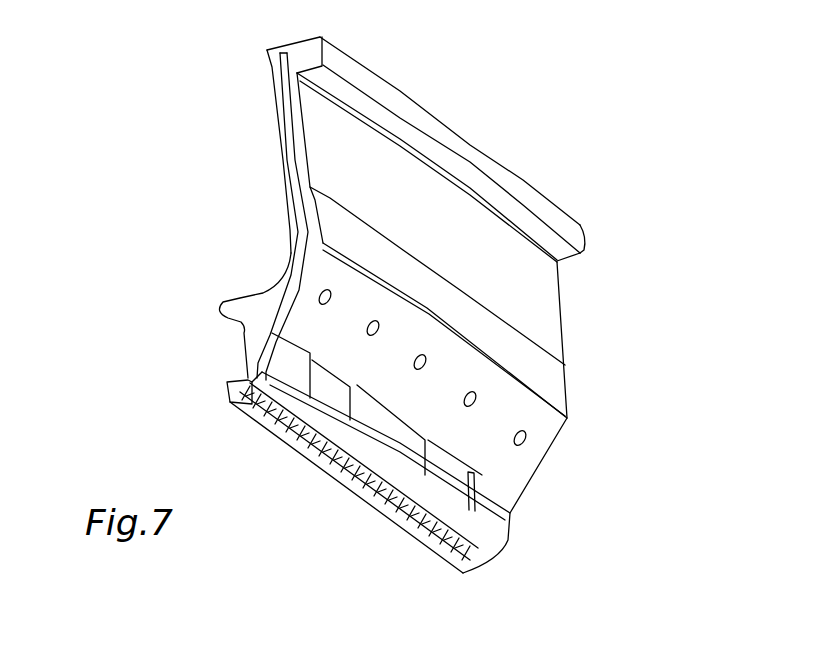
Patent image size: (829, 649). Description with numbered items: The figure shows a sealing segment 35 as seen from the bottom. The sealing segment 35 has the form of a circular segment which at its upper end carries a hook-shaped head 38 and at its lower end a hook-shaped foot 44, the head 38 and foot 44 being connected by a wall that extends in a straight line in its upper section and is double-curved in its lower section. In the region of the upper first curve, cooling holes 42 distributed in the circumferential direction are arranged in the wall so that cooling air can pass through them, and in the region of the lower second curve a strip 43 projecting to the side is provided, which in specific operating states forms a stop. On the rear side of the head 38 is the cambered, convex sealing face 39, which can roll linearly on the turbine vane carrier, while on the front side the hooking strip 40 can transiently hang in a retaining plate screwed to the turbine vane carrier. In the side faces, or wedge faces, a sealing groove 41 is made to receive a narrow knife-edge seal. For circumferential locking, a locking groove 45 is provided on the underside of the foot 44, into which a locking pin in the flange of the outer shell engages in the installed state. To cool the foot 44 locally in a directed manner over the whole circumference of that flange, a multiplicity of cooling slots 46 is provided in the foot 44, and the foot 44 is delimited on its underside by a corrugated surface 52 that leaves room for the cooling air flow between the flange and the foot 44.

The sealing segment 35 is at (225, 160).
The head 38 is at (598, 262).
The sealing face 39 is at (262, 52).
The hooking strip 40 is at (530, 188).
The sealing groove 41 is at (290, 112).
The cooling holes 42 is at (476, 398).
The hook flange 43 is at (220, 300).
The foot 44 is at (222, 392).
The locking groove 45 is at (483, 477).
The cooling slots 46 is at (450, 113).
The corrugated surface 52 is at (407, 530).